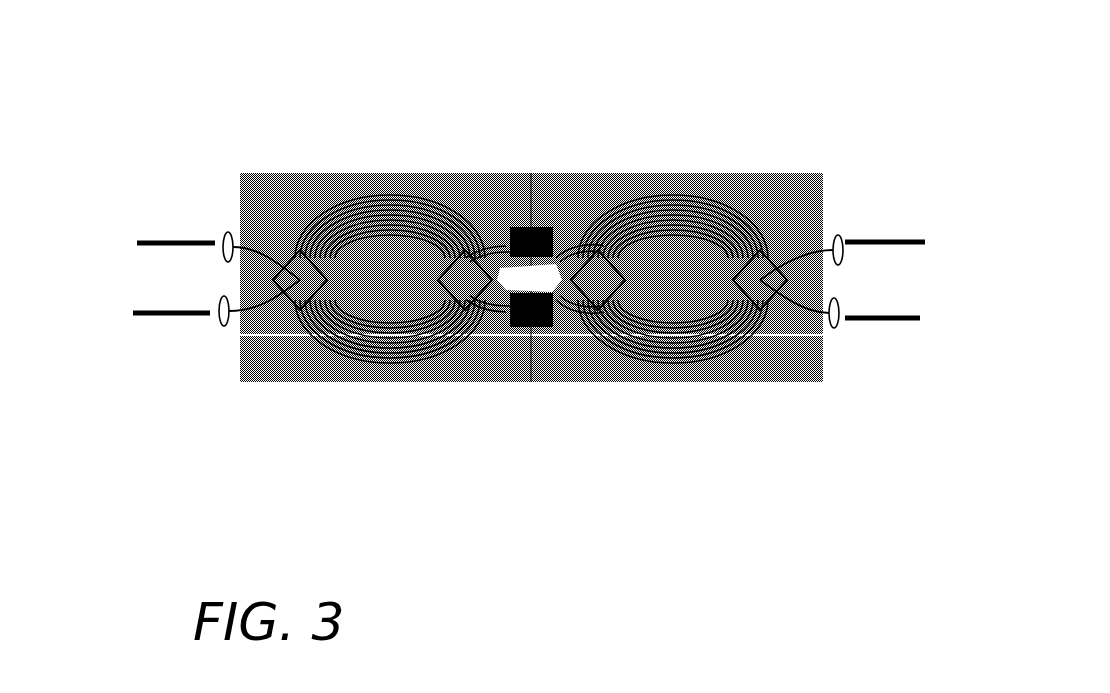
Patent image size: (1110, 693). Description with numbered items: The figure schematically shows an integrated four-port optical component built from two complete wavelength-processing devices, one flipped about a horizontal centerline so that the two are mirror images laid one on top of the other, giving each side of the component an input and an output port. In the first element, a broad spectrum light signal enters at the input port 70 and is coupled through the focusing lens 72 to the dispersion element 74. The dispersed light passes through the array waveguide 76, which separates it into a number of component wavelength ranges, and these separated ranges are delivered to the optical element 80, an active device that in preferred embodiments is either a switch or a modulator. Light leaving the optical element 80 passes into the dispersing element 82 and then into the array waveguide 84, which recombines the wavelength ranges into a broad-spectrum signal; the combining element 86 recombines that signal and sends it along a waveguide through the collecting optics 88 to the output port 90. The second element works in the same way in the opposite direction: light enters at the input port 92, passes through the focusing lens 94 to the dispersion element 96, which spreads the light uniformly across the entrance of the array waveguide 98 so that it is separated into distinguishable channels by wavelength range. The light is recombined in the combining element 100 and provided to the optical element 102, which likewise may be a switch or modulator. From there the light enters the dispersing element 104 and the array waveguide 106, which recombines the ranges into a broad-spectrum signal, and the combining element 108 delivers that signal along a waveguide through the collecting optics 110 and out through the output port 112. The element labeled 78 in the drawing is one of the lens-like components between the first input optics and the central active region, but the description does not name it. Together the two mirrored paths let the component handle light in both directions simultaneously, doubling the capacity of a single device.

The input port 70 is at (190, 241).
The focusing lens 72 is at (228, 232).
The dispersion element 74 is at (292, 382).
The array waveguide 76 is at (385, 382).
The second lens 78 is at (440, 370).
The optical element 80 is at (615, 225).
The dispersing element 82 is at (625, 382).
The array waveguide 84 is at (730, 382).
The combining element 86 is at (788, 382).
The collecting optics 88 is at (838, 235).
The output port 90 is at (868, 240).
The input port 92 is at (878, 322).
The focusing lens 94 is at (836, 330).
The dispersion element 96 is at (762, 205).
The array waveguide 98 is at (720, 200).
The combining element 100 is at (560, 235).
The optical element 102 is at (455, 220).
The dispersing element 104 is at (470, 235).
The array waveguide 106 is at (360, 205).
The combining element 108 is at (283, 222).
The collecting optics 110 is at (229, 345).
The output port 112 is at (182, 318).